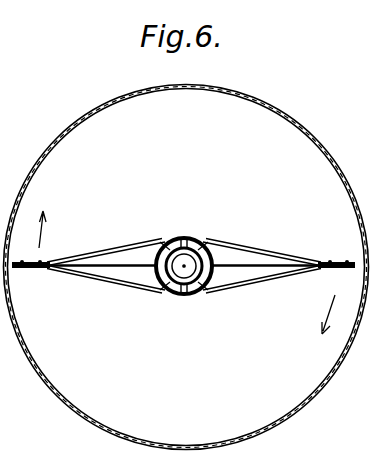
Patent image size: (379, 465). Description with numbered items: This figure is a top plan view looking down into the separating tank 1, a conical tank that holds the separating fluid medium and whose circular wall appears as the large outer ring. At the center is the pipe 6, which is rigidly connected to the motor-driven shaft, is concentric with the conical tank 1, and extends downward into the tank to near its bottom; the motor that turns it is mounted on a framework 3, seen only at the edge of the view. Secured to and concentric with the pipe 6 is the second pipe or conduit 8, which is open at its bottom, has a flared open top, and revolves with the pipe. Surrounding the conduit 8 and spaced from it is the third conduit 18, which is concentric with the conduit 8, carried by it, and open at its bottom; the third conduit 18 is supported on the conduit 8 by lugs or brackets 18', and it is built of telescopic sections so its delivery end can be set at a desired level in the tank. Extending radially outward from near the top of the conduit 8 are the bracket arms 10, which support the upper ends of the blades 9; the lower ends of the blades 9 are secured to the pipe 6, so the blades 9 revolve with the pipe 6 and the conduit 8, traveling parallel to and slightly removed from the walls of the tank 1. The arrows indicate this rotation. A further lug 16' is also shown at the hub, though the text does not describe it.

The separating tank 1 is at (284, 411).
The framework 3 is at (5, 373).
The pipe 6 is at (198, 252).
The second pipe or conduit 8 is at (168, 287).
The blades 9 is at (30, 270).
The bracket arms 10 is at (110, 248).
The lower lug 16' is at (197, 307).
The third conduit 18 is at (178, 251).
The lugs or brackets 18' is at (195, 224).